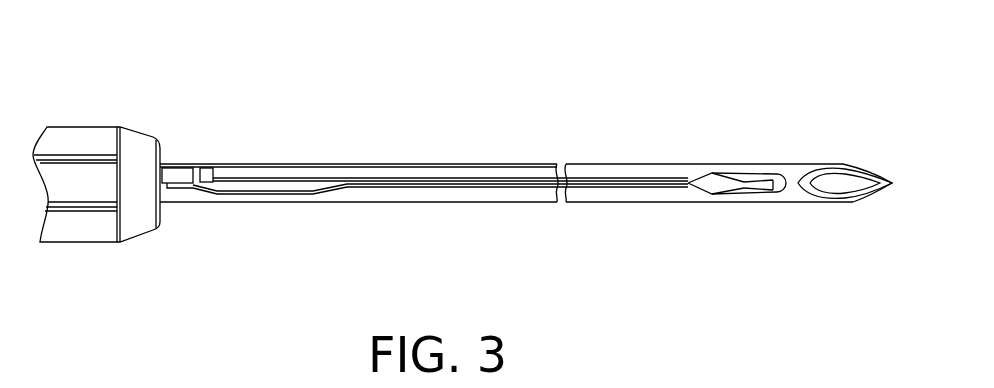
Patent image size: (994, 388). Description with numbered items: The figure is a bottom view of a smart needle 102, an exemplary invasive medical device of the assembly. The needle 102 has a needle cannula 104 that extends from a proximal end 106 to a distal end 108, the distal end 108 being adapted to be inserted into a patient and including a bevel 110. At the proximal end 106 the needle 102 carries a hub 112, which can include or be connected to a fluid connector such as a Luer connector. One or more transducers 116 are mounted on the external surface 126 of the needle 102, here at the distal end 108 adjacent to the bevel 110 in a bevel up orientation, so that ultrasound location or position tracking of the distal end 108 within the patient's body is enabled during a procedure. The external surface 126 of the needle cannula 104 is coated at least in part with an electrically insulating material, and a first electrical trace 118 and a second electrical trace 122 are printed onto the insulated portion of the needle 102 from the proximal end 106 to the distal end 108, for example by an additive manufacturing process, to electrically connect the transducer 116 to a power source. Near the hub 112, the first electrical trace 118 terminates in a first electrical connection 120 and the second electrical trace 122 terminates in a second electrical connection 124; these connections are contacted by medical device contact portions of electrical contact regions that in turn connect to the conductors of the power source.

The needle 102 is at (288, 73).
The needle cannula 104 is at (443, 168).
The proximal end 106 is at (175, 147).
The distal end 108 is at (837, 153).
The bevel 110 is at (867, 170).
The hub 112 is at (92, 142).
The transducer 116 is at (735, 200).
The first electrical trace 118 is at (357, 172).
The first electrical connection 120 is at (218, 173).
The second electrical trace 122 is at (312, 195).
The second electrical connection 124 is at (173, 190).
The external surface 126 is at (507, 168).